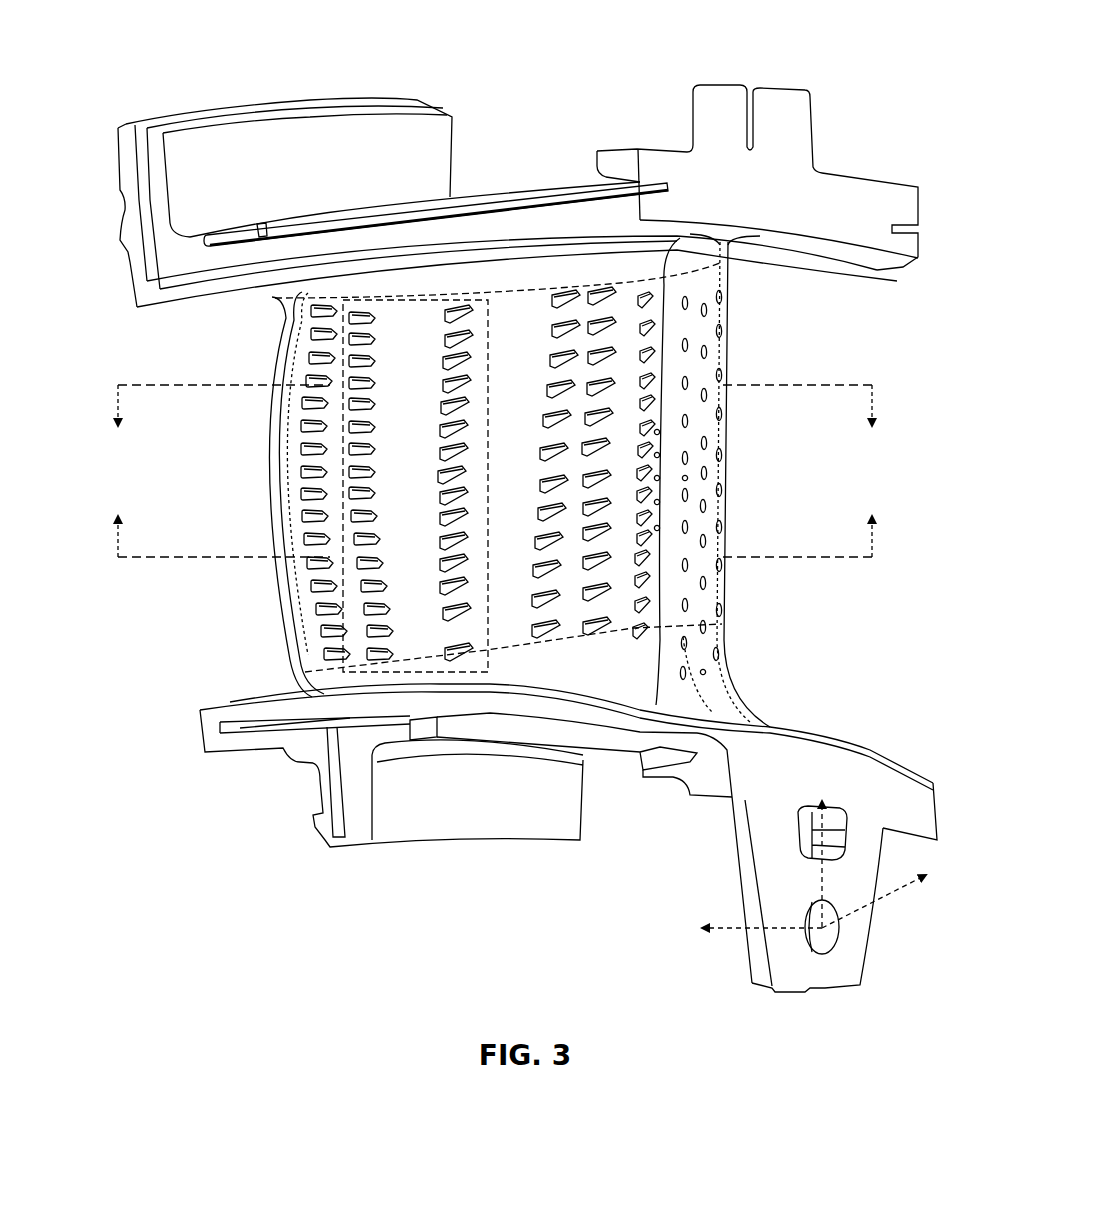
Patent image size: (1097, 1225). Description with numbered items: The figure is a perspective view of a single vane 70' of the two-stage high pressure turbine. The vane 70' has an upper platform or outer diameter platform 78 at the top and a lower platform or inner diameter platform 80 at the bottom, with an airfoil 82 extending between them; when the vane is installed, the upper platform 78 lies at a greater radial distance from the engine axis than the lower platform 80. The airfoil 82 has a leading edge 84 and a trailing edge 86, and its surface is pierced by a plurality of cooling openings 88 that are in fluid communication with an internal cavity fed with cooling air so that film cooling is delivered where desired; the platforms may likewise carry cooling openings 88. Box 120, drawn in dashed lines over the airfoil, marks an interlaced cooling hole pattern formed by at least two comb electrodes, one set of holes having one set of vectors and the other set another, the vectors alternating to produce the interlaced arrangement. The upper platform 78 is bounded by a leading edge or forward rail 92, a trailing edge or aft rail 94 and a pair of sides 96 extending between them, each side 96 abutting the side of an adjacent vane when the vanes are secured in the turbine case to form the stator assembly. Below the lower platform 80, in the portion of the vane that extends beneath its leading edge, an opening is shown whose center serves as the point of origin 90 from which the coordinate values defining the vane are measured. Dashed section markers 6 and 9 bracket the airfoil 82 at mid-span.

The vane 70' is at (515, 499).
The trailing edge or aft rail 94 is at (128, 157).
The pair of sides 96 is at (517, 204).
The upper platform or outer diameter platform 78 is at (834, 142).
The leading edge or forward rail 92 is at (813, 212).
The trailing edge 86 is at (258, 462).
The airfoil 82 is at (400, 592).
The cooling openings 88 is at (708, 352).
The leading edge 84 is at (693, 565).
The lower platform or inner diameter platform 80 is at (249, 714).
The box 120 is at (470, 675).
The point of origin 90 is at (826, 933).
The section line FIG. 6 is at (495, 425).
The section line FIG. 9 is at (495, 518).